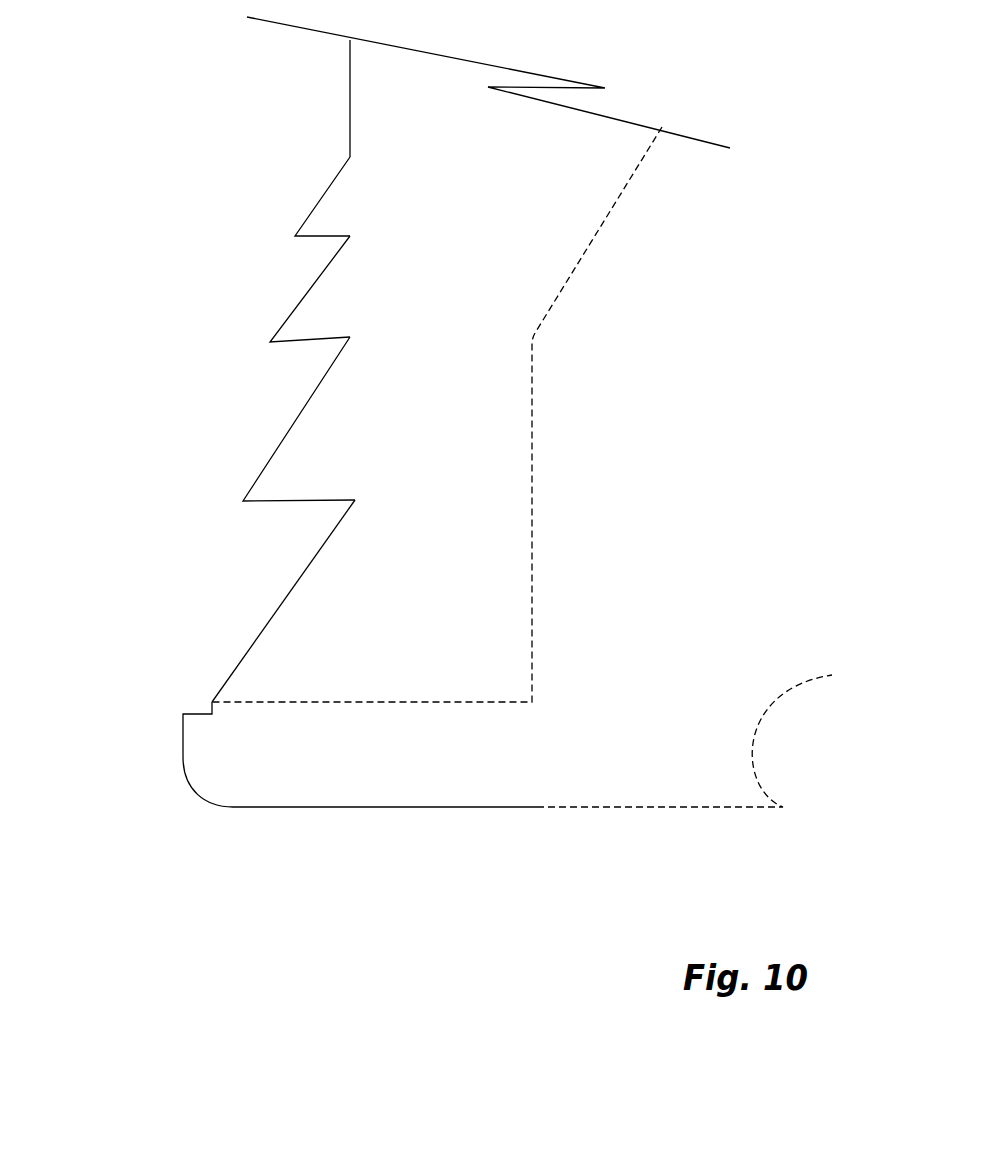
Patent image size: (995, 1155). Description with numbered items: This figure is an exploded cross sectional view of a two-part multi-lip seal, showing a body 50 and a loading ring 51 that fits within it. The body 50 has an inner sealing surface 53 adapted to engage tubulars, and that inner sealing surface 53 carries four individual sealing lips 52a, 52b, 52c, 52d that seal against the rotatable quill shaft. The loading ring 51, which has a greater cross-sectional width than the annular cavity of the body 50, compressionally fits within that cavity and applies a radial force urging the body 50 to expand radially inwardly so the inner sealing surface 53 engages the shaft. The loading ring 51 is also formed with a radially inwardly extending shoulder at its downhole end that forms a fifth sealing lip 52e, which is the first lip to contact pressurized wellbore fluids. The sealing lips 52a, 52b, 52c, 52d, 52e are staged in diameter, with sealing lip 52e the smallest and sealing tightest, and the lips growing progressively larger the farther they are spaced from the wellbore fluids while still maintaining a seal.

The body 50 is at (485, 162).
The loading ring 51 is at (414, 762).
The sealing lip 52a is at (295, 236).
The sealing lip 52b is at (270, 342).
The sealing lip 52c is at (243, 501).
The sealing lip 52d is at (212, 702).
The sealing lip 52e is at (177, 715).
The inner sealing surface 53 is at (350, 118).